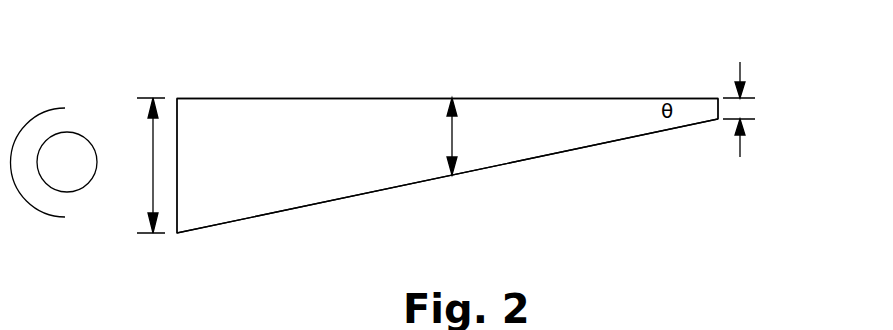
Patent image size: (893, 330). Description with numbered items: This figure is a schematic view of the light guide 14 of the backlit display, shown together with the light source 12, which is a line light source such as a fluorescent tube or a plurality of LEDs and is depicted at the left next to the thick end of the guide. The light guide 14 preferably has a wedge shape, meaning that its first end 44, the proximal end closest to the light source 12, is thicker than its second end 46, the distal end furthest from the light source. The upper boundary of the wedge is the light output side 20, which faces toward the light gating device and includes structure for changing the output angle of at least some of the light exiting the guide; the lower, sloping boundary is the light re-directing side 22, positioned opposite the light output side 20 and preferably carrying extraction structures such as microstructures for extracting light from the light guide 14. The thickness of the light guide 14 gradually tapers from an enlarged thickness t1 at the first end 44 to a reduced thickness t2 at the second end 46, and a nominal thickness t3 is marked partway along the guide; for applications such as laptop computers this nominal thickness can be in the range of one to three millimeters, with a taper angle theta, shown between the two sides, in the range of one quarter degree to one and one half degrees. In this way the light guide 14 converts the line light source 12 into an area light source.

The light source 12 is at (74, 191).
The light guide 14 is at (238, 220).
The light output side 20 is at (600, 98).
The light re-directing side 22 is at (538, 157).
The first end 44 is at (176, 235).
The second end 46 is at (719, 121).
The enlarged thickness t1 is at (152, 165).
The reduced thickness t2 is at (742, 109).
The nominal thickness t3 is at (452, 135).